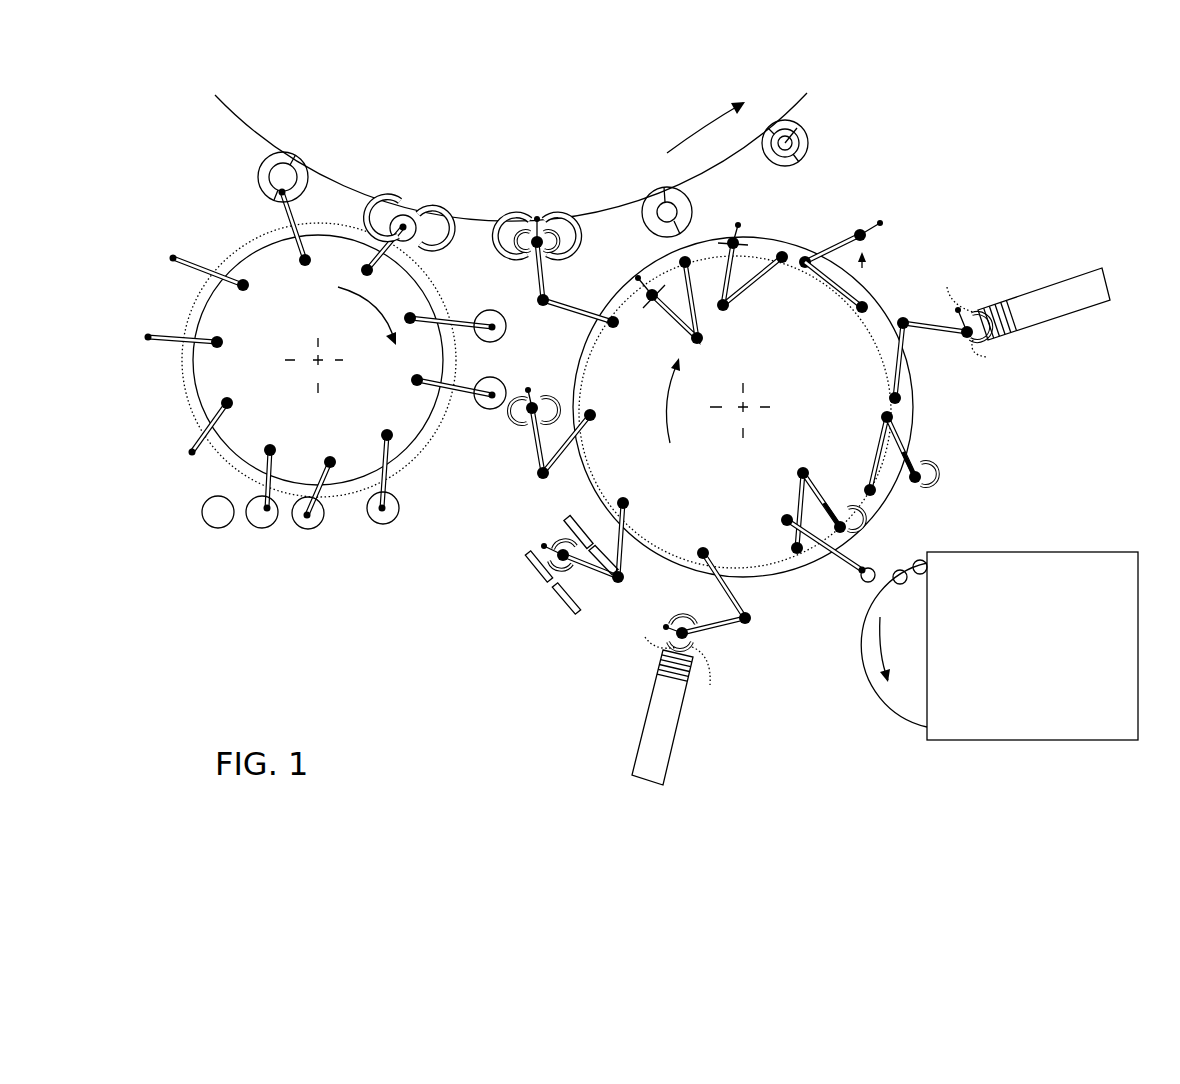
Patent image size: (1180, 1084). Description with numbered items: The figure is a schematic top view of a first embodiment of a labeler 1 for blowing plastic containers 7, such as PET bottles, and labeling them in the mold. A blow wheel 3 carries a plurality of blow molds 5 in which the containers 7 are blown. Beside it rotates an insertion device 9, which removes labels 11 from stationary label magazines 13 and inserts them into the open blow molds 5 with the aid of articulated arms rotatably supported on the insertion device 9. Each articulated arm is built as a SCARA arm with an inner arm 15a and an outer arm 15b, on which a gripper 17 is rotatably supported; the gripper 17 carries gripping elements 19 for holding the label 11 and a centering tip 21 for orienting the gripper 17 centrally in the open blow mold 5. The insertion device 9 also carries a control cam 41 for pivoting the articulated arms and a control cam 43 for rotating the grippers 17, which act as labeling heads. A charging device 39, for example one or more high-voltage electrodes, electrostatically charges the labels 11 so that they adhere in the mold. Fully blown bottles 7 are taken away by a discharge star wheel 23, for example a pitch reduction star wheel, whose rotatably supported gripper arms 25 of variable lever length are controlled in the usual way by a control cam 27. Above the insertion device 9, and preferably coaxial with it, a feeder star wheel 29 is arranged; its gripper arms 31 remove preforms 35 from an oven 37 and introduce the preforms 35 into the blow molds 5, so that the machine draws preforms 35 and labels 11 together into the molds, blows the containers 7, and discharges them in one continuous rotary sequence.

The labeler 1 is at (634, 433).
The blow wheel 3 is at (512, 125).
The blow mold 5 is at (807, 147).
The plastic container 7 is at (273, 175).
The rotating insertion device 9 is at (743, 407).
The feeder star wheel 29 is at (736, 497).
The label 11 is at (516, 417).
The stationary label magazine 13 is at (1085, 302).
The inner arm 15a is at (847, 298).
The outer arm 15b is at (833, 253).
The gripper 17 is at (863, 262).
The gripping element 19 is at (860, 227).
The centering tip 21 is at (882, 222).
The discharge star wheel 23 is at (373, 404).
The gripper arm 25 is at (203, 433).
The control cam 27 is at (190, 292).
The gripper arm 31 is at (853, 567).
The preform 35 is at (803, 127).
The oven 37 is at (1052, 656).
The charging device 39 is at (556, 612).
The control cam 41 is at (768, 548).
The control cam 43 is at (947, 293).